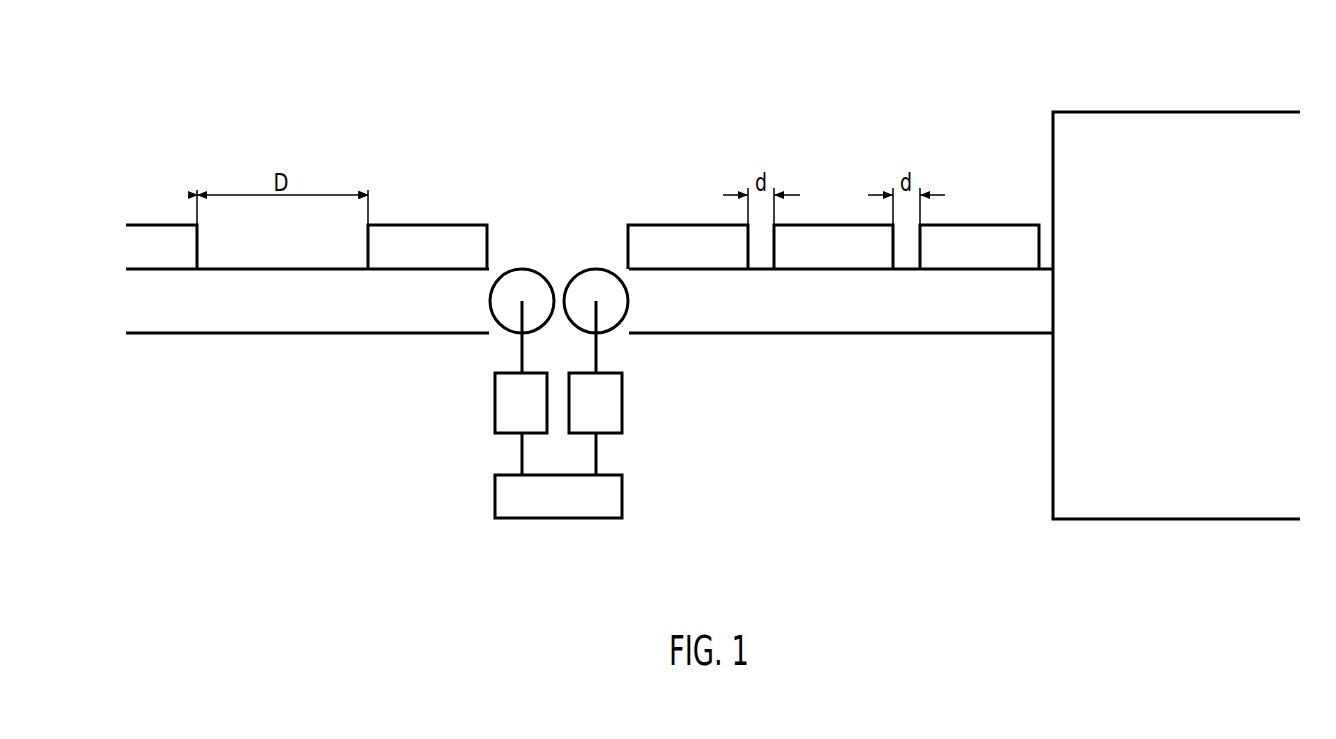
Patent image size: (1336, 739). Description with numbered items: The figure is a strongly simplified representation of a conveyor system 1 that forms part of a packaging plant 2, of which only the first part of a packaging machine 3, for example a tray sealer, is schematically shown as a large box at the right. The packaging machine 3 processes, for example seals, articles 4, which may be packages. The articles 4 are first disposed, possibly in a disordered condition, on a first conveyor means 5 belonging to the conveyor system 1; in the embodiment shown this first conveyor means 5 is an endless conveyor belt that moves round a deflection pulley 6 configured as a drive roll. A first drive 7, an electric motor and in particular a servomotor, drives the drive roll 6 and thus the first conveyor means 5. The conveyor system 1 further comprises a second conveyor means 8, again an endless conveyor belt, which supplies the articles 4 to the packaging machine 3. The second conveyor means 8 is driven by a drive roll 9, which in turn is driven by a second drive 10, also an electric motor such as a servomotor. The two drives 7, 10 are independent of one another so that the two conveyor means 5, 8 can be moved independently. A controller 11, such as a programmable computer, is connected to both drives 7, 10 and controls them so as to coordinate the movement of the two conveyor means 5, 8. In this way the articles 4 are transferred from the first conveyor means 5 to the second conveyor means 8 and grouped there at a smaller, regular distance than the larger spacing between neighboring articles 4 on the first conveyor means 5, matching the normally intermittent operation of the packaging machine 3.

The conveyor system 1 is at (522, 161).
The packaging plant 2 is at (930, 53).
The packaging machine 3 is at (1117, 122).
The articles 4 is at (143, 233).
The first conveyor means 5 is at (265, 335).
The deflection pulley 6 is at (524, 278).
The first drive 7 is at (501, 398).
The second conveyor means 8 is at (741, 335).
The drive roll 9 is at (598, 278).
The second drive 10 is at (616, 397).
The controller 11 is at (501, 492).